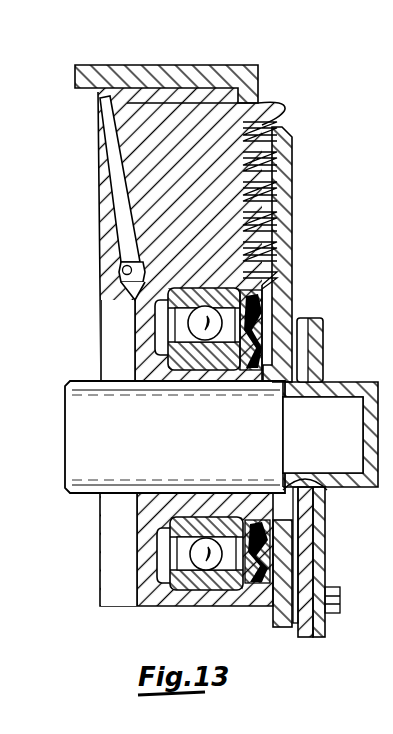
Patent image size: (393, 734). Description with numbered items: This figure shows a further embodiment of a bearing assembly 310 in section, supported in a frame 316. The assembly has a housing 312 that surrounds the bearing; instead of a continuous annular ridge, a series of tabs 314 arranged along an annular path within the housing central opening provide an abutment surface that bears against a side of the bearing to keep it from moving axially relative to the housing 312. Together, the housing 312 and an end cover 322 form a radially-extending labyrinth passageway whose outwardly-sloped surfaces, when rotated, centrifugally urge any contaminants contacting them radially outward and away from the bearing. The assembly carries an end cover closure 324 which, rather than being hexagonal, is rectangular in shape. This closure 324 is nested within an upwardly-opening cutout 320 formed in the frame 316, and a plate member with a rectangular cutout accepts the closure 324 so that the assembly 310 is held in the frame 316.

The bearing assembly 310 is at (277, 98).
The housing 312 is at (120, 232).
The tabs 314 is at (263, 297).
The frame 316 is at (309, 314).
The upwardly-opening cutout 320 is at (323, 478).
The end cover 322 is at (291, 244).
The end cover closure 324 is at (337, 383).